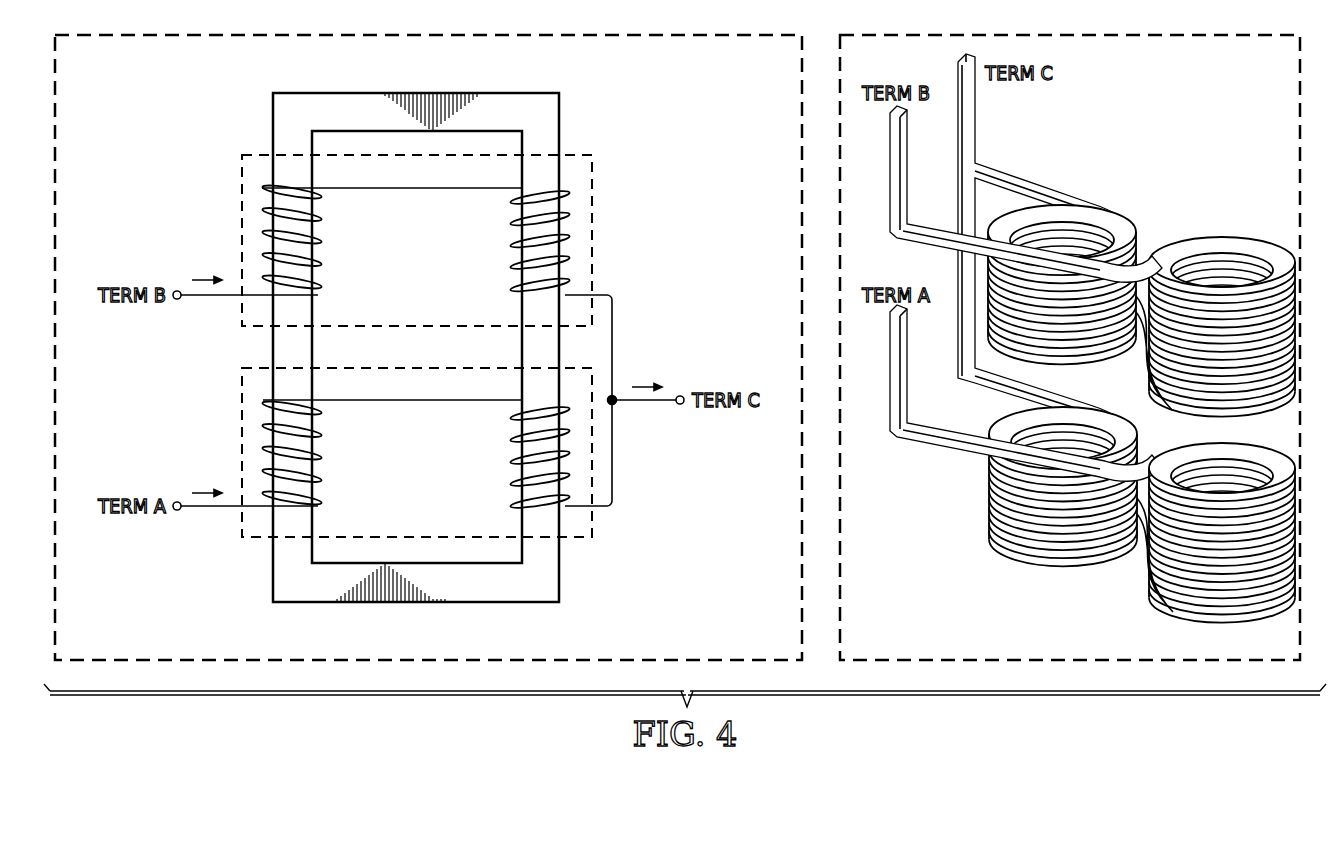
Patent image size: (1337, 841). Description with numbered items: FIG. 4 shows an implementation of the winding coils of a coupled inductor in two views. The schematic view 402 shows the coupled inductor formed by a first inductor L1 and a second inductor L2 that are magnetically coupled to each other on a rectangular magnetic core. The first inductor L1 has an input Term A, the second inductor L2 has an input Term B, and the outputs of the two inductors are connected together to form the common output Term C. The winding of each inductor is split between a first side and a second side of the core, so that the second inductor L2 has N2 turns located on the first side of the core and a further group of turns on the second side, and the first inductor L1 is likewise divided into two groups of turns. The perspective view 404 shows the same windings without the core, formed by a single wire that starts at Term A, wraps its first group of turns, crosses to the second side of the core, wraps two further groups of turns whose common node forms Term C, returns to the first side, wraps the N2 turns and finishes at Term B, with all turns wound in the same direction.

The view 402 is at (712, 127).
The perspective view 404 is at (1188, 127).
The first inductor L1 is at (242, 428).
The second inductor L2 is at (242, 217).
The N2 turns N2 is at (778, 299).